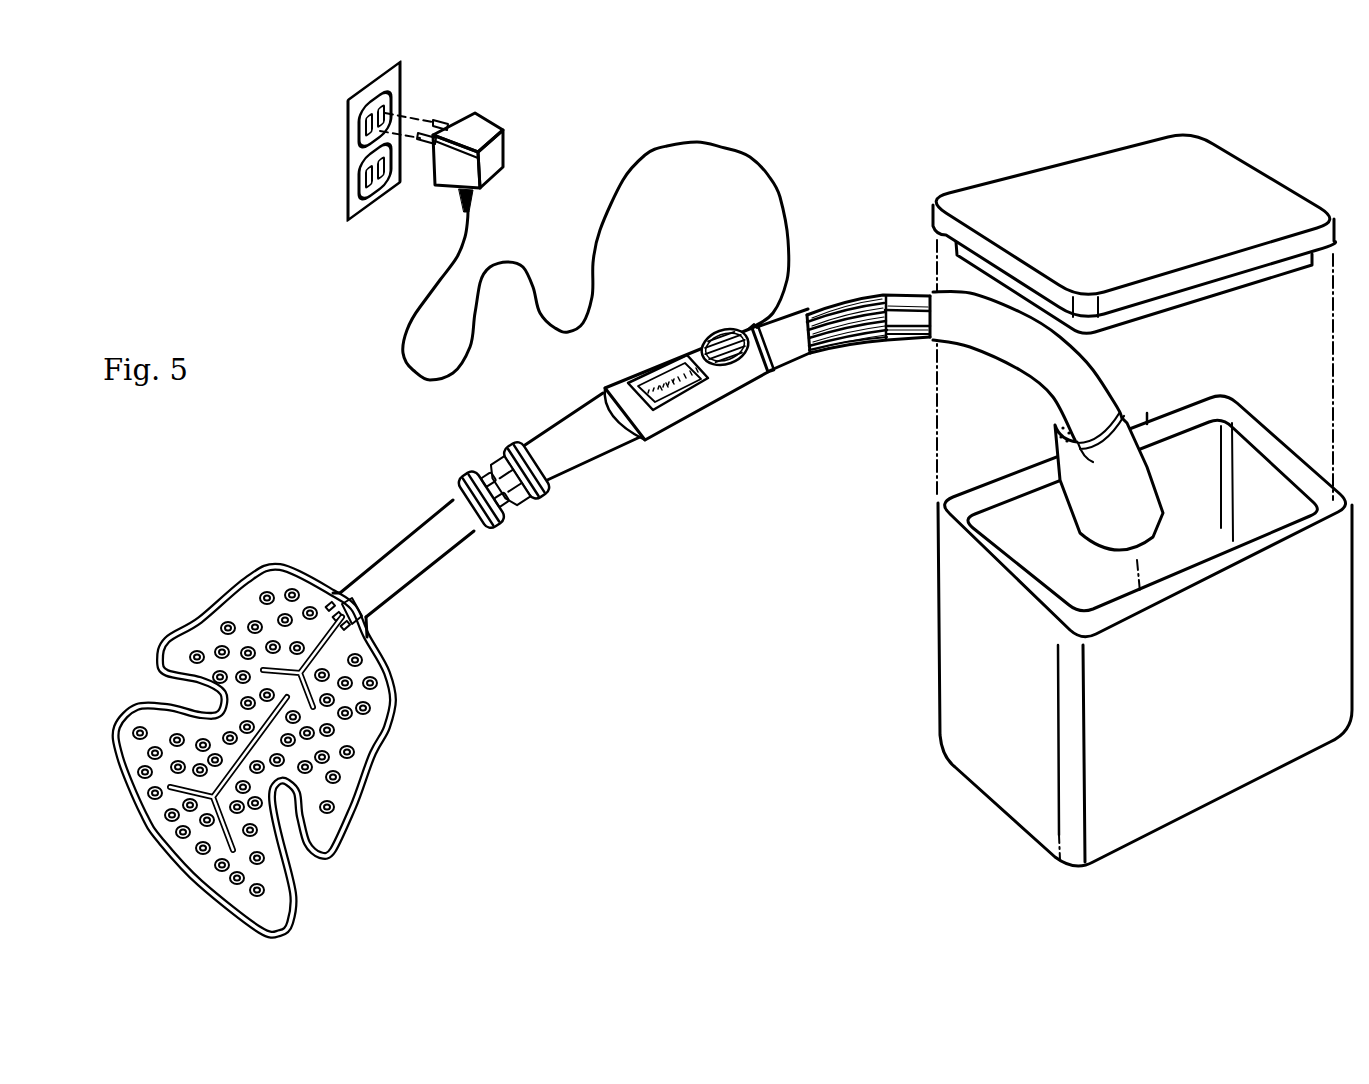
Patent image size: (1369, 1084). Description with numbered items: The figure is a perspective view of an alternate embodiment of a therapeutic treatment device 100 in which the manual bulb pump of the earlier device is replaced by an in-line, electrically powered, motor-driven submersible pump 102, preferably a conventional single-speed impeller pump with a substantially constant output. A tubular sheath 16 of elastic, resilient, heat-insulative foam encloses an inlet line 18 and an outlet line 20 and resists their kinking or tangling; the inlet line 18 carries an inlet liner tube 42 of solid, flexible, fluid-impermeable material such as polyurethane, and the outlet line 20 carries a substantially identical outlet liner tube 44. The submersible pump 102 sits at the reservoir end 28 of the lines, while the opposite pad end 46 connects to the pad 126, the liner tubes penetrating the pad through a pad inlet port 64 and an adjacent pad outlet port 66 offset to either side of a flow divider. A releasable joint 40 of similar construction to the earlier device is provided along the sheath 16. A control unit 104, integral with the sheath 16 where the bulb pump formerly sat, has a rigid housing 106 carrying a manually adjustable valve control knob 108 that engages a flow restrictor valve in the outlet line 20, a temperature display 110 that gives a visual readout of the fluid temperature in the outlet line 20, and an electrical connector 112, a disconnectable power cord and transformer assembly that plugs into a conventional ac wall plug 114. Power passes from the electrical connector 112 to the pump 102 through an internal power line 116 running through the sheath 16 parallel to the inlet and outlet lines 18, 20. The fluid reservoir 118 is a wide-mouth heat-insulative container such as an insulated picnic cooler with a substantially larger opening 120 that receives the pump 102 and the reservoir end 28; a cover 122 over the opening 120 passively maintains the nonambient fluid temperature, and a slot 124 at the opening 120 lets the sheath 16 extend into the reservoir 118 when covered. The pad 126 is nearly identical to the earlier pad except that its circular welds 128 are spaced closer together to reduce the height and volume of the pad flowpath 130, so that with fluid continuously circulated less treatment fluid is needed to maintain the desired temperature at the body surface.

The therapeutic treatment device 100 is at (640, 622).
The tubular sheath 16 is at (590, 465).
The inlet line 18 is at (835, 357).
The outlet line 20 is at (832, 301).
The reservoir end 28 is at (1110, 424).
The releasable joint 40 is at (513, 450).
The inlet liner tube 42 is at (905, 346).
The outlet liner tube 44 is at (915, 301).
The pad end 46 is at (360, 586).
The pad inlet port 64 is at (366, 621).
The pad outlet port 66 is at (340, 590).
The submersible pump 102 is at (1136, 442).
The control unit 104 is at (657, 432).
The rigid housing 106 is at (735, 402).
The valve control knob 108 is at (716, 330).
The temperature display 110 is at (670, 368).
The electrical connector 112 is at (747, 134).
The ac wall plug 114 is at (351, 158).
The internal power line 116 is at (858, 292).
The fluid reservoir 118 is at (940, 692).
The opening 120 is at (1245, 461).
The cover 122 is at (1113, 171).
The slot 124 is at (1056, 473).
The pad 126 is at (386, 749).
The circular welds 128 is at (377, 704).
The pad flowpath 130 is at (168, 828).